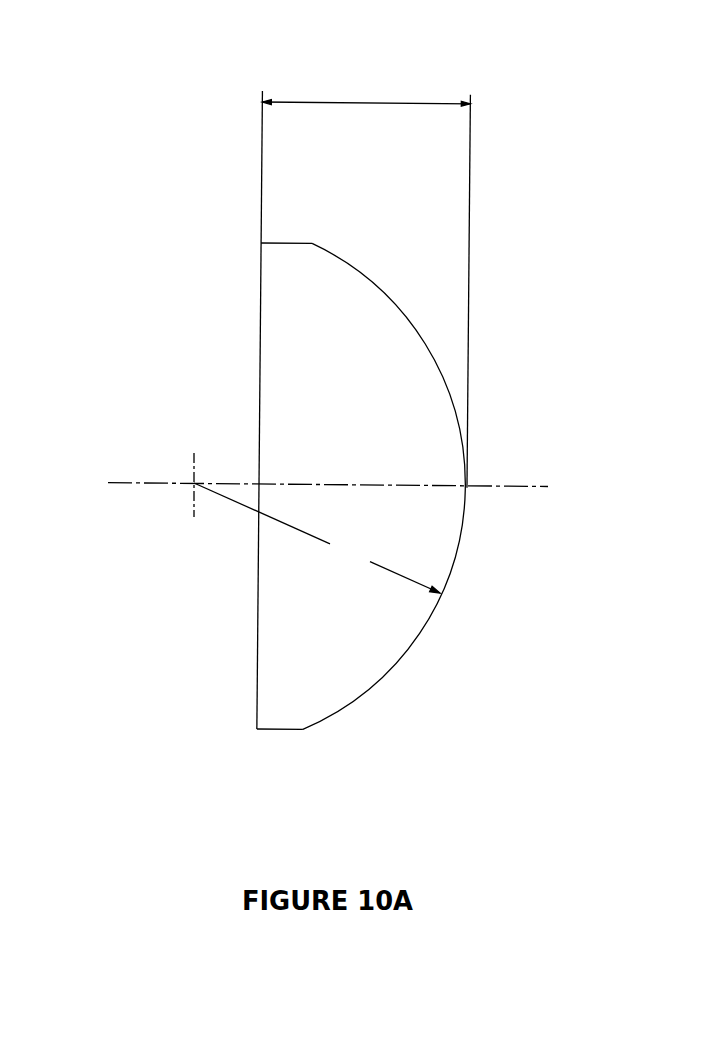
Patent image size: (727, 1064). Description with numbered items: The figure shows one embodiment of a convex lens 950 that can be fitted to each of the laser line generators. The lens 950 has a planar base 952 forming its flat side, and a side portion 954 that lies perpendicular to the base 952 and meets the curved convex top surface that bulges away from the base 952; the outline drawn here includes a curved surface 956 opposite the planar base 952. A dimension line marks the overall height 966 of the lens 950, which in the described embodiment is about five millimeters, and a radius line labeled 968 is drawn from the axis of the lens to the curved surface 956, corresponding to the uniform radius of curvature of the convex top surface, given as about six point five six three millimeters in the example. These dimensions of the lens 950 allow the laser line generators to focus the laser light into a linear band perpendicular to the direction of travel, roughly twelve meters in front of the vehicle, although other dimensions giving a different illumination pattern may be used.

The convex lens 950 is at (221, 713).
The planar base 952 is at (258, 324).
The side portion 954 is at (280, 243).
The curved surface 956 is at (428, 345).
The overall height 966 is at (418, 96).
The radius of curvature 968 is at (292, 528).